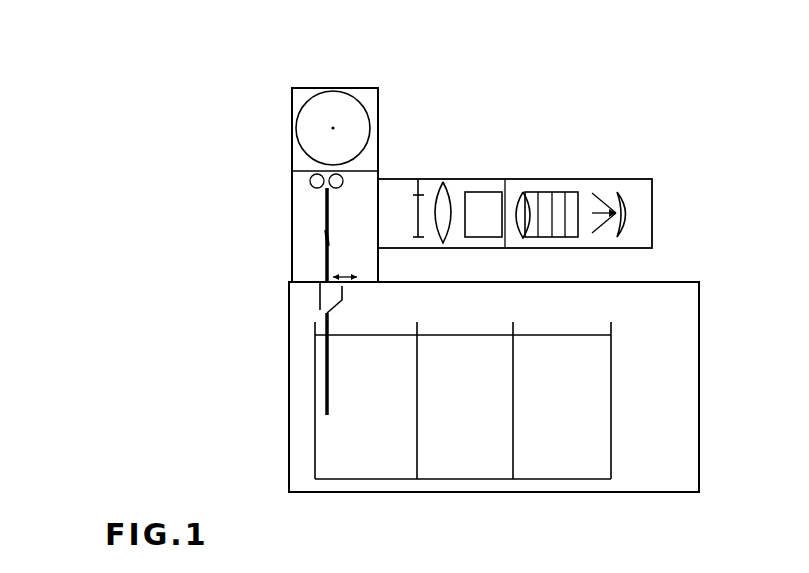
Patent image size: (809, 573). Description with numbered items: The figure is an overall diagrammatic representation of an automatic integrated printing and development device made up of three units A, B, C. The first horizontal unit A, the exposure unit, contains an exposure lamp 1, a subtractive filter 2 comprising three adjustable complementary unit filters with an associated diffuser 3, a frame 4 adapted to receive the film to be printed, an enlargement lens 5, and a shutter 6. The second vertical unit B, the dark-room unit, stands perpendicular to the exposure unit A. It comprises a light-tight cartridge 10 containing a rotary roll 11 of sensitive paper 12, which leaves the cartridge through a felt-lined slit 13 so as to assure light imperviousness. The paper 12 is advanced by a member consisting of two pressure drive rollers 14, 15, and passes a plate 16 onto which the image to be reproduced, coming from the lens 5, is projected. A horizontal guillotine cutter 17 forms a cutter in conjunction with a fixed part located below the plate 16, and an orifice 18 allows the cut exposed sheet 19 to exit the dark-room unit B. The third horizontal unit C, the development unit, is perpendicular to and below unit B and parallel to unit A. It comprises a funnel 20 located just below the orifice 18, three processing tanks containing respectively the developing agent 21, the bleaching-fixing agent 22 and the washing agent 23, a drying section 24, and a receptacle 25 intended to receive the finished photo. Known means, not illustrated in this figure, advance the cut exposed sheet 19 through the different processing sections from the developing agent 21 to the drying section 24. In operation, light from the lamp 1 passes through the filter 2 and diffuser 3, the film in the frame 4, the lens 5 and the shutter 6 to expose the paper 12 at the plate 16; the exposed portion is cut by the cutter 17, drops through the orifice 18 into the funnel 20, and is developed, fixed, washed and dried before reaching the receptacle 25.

The exposure lamp 1 is at (620, 198).
The subtractive filter 2 is at (547, 192).
The diffuser 3 is at (521, 192).
The frame 4 is at (489, 200).
The enlargement lens 5 is at (443, 207).
The shutter 6 is at (418, 179).
The light-tight cartridge 10 is at (290, 88).
The rotary roll 11 is at (310, 128).
The sensitive paper 12 is at (330, 213).
The felt-lined slit 13 is at (337, 165).
The pressure drive roller 14 is at (310, 181).
The pressure drive roller 15 is at (328, 186).
The plate 16 is at (326, 238).
The horizontal guillotine cutter 17 is at (350, 280).
The orifice 18 is at (320, 285).
The cut exposed sheet 19 is at (323, 333).
The funnel 20 is at (322, 310).
The developing agent 21 is at (377, 457).
The bleaching-fixing agent 22 is at (462, 450).
The washing agent 23 is at (570, 452).
The drying section 24 is at (655, 341).
The receptacle 25 is at (677, 471).
The exposure unit A is at (652, 178).
The dark-room unit B is at (377, 88).
The development unit C is at (699, 415).